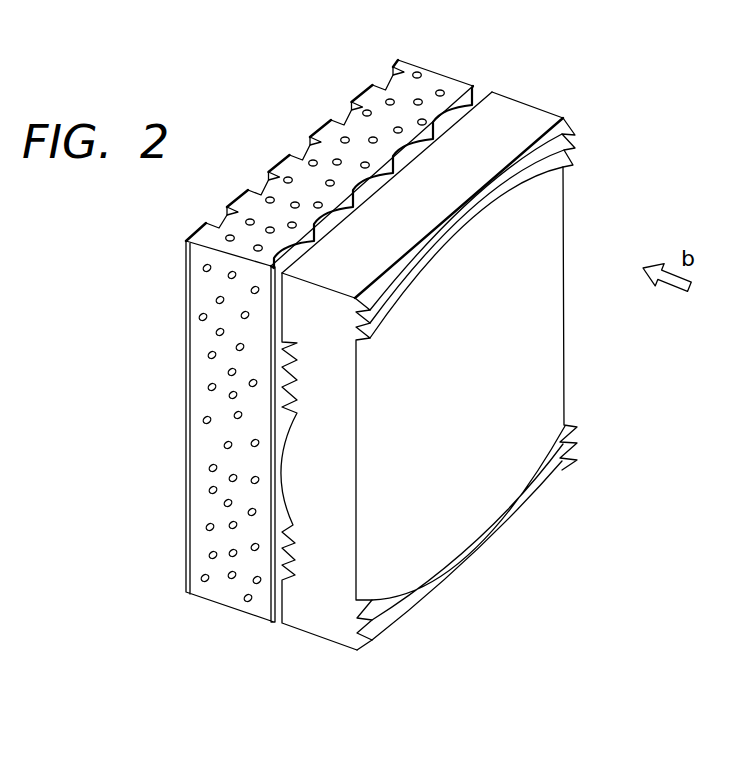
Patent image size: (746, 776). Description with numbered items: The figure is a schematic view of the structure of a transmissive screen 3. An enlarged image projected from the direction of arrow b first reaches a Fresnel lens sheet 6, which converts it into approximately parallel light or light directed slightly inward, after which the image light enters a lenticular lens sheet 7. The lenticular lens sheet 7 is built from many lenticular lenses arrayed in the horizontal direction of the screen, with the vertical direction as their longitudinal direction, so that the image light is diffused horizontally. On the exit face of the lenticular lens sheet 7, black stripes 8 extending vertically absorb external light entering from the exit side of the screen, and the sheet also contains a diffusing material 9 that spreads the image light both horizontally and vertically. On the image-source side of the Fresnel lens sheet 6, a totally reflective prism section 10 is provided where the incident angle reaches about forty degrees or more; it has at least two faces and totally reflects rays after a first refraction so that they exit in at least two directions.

The transmissive screen 3 is at (339, 375).
The Fresnel lens sheet 6 is at (386, 395).
The lenticular lens sheet 7 is at (218, 602).
The black stripes 8 is at (366, 90).
The diffusing material 9 is at (441, 89).
The totally reflective prism section 10 is at (578, 142).